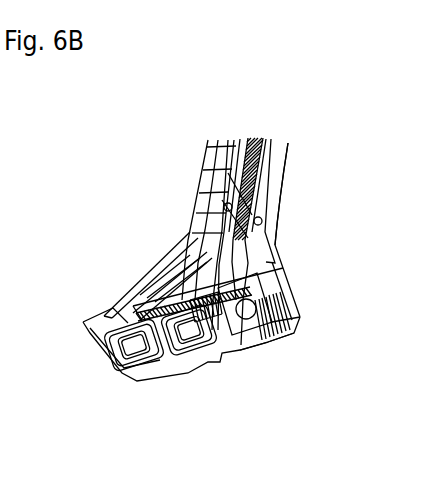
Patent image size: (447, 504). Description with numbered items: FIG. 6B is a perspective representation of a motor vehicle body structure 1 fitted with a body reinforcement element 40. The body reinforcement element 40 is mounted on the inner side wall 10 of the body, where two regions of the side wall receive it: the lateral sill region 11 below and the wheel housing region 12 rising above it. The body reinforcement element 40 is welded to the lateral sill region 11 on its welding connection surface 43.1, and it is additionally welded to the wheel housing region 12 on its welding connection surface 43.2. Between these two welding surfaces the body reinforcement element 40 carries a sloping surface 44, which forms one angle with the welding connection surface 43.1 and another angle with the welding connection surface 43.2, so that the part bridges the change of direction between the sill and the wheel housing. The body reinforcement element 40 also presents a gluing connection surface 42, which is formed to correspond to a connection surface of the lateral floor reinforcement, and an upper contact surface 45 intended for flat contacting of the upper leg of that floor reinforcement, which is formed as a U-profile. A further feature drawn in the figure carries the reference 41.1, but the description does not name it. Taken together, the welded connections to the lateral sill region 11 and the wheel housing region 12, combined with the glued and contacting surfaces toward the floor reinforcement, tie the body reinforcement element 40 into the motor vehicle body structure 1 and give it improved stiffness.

The motor vehicle body structure 1 is at (115, 133).
The inner side wall 10 is at (170, 182).
The lateral sill region 11 is at (168, 352).
The wheel housing region 12 is at (250, 217).
The body reinforcement element 40 is at (227, 342).
The strut 41.1 is at (220, 301).
The gluing connection surface 42 is at (212, 260).
The welding connection surface 43.1 is at (294, 330).
The welding connection surface 43.2 is at (268, 284).
The sloping surface 44 is at (291, 340).
The upper contact surface 45 is at (258, 352).